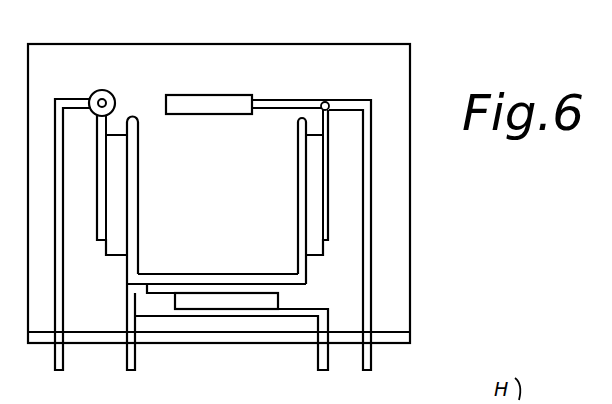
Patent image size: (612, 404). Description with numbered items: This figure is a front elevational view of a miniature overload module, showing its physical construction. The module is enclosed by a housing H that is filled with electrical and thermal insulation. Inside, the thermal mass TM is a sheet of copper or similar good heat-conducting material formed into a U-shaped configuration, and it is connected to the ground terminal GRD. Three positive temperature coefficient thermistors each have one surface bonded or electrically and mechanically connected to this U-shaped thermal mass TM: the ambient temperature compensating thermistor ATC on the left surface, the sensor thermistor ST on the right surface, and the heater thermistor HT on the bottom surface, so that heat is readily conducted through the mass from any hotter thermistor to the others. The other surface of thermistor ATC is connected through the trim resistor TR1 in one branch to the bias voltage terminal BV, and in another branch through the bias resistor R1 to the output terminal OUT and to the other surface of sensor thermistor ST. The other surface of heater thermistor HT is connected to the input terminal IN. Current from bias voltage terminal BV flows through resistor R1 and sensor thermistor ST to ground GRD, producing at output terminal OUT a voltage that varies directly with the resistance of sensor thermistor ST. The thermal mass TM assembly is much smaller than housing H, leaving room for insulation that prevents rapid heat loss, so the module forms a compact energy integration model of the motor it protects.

The housing H is at (122, 44).
The trim resistor TR1 is at (107, 90).
The bias resistor R1 is at (232, 94).
The thermal mass TM is at (139, 163).
The sensor thermistor ST is at (306, 182).
The heater thermistor HT is at (228, 300).
The ambient temperature compensating thermistor ATC is at (116, 243).
The bias voltage terminal BV is at (68, 251).
The ground terminal GRD is at (131, 343).
The input terminal IN is at (232, 356).
The output terminal OUT is at (323, 251).